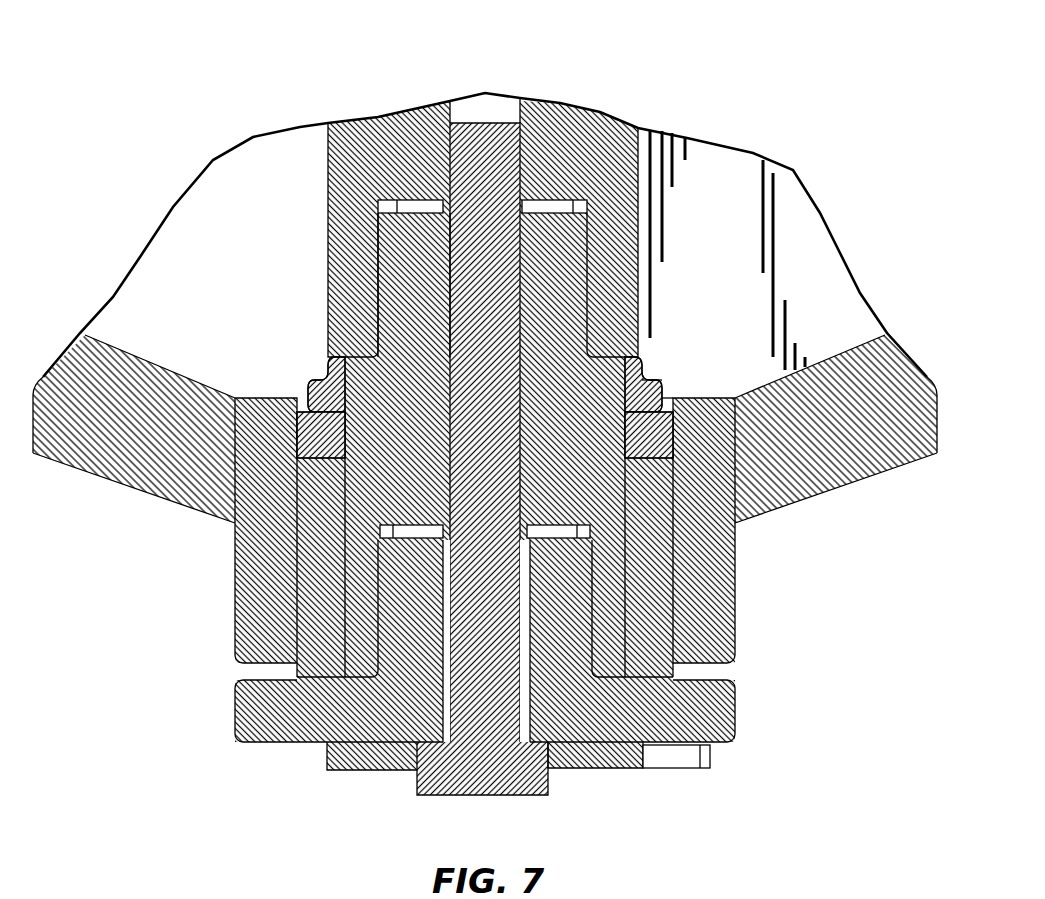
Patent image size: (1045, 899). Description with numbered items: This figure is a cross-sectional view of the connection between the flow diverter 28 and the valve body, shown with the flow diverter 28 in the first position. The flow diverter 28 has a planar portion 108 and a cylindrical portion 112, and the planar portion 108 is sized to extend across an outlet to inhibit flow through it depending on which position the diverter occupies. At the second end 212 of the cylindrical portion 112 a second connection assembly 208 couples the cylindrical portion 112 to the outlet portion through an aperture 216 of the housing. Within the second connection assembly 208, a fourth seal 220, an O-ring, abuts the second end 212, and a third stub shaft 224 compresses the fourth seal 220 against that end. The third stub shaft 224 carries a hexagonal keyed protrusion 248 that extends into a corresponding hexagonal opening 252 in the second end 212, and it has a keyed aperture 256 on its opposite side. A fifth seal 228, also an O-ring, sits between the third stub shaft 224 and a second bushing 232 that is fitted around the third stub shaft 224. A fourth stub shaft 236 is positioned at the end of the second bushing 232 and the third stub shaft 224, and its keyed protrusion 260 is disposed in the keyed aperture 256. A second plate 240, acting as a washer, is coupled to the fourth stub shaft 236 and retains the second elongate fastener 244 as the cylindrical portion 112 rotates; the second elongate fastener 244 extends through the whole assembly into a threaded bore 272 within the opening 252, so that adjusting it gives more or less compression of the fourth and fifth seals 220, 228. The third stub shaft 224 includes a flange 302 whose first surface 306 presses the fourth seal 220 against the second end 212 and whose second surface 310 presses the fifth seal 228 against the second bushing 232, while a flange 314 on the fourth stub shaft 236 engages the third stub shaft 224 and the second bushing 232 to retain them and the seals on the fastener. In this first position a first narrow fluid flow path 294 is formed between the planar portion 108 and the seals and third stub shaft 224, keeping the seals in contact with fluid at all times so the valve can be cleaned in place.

The flow diverter 28 is at (820, 287).
The planar portion 108 is at (738, 215).
The cylindrical portion 112 is at (600, 152).
The second connection assembly 208 is at (207, 712).
The second end 212 is at (348, 290).
The aperture 216 is at (294, 408).
The fourth seal 220 is at (343, 362).
The third stub shaft 224 is at (385, 470).
The fifth seal 228 is at (646, 432).
The second bushing 232 is at (646, 607).
The fourth stub shaft 236 is at (715, 712).
The second plate 240 is at (593, 758).
The second elongate fastener 244 is at (495, 768).
The keyed protrusion 248 is at (400, 265).
The opening 252 is at (420, 208).
The keyed aperture 256 is at (412, 532).
The keyed protrusion 260 is at (412, 625).
The threaded bore 272 is at (457, 112).
The first narrow fluid flow path 294 is at (667, 395).
The flange 302 is at (645, 392).
The first surface 306 is at (642, 373).
The second surface 310 is at (648, 412).
The flange 314 is at (297, 700).